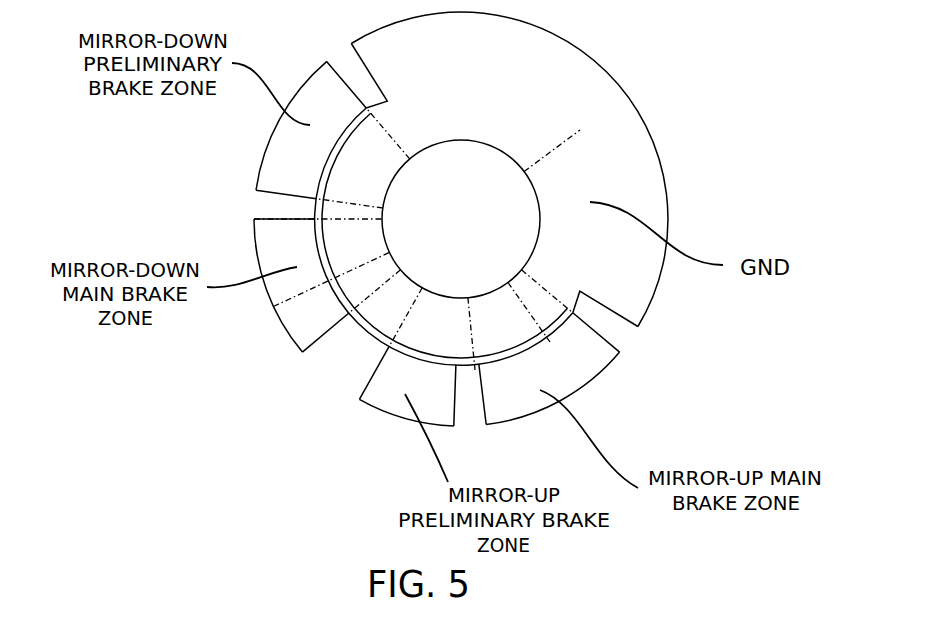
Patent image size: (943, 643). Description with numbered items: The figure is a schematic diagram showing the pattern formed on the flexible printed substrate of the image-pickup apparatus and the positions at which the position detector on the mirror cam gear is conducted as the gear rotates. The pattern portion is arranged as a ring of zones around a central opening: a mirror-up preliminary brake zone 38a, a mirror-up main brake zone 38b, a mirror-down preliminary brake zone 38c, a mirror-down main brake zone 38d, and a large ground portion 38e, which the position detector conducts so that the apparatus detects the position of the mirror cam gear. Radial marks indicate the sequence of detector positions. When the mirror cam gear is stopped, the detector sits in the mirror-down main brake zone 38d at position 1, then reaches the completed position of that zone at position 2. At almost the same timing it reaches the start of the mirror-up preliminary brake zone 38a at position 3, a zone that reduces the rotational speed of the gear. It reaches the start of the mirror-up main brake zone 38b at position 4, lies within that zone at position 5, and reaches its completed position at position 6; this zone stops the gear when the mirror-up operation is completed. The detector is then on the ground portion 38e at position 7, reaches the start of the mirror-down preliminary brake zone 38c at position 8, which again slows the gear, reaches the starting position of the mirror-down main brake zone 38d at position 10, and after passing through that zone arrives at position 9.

The position 1 is at (273, 306).
The position 2 is at (302, 352).
The position 3 is at (359, 399).
The position 4 is at (475, 370).
The position 5 is at (550, 342).
The position 6 is at (620, 352).
The position 7 is at (580, 130).
The position 8 is at (327, 62).
The position 9 is at (256, 190).
The position 10 is at (254, 219).
The mirror-up preliminary brake zone 38a is at (407, 386).
The mirror-up main brake zone 38b is at (549, 369).
The mirror-down preliminary brake zone 38c is at (311, 130).
The mirror-down main brake zone 38d is at (301, 285).
The ground portion 38e is at (509, 169).